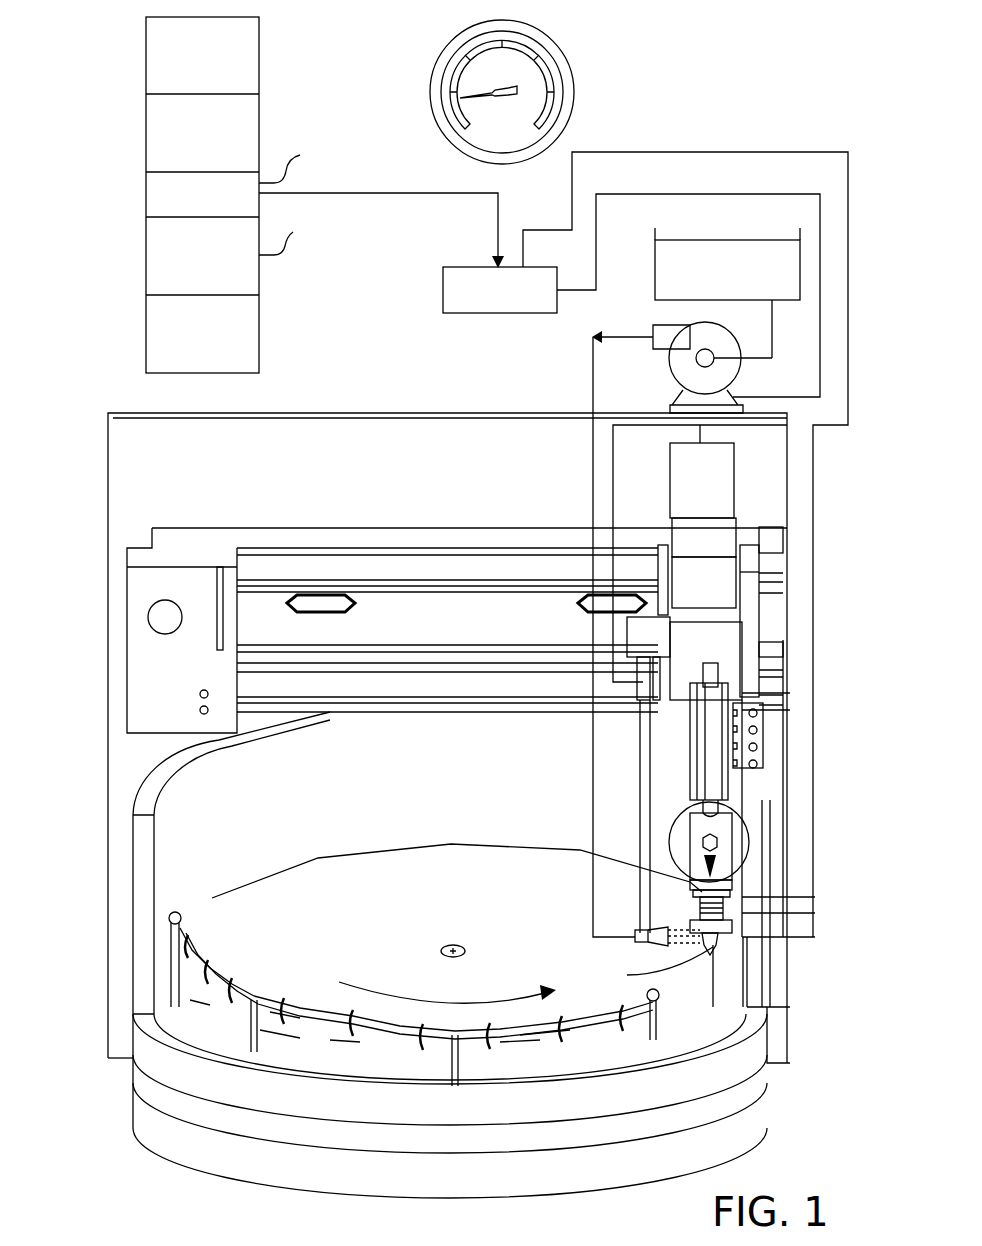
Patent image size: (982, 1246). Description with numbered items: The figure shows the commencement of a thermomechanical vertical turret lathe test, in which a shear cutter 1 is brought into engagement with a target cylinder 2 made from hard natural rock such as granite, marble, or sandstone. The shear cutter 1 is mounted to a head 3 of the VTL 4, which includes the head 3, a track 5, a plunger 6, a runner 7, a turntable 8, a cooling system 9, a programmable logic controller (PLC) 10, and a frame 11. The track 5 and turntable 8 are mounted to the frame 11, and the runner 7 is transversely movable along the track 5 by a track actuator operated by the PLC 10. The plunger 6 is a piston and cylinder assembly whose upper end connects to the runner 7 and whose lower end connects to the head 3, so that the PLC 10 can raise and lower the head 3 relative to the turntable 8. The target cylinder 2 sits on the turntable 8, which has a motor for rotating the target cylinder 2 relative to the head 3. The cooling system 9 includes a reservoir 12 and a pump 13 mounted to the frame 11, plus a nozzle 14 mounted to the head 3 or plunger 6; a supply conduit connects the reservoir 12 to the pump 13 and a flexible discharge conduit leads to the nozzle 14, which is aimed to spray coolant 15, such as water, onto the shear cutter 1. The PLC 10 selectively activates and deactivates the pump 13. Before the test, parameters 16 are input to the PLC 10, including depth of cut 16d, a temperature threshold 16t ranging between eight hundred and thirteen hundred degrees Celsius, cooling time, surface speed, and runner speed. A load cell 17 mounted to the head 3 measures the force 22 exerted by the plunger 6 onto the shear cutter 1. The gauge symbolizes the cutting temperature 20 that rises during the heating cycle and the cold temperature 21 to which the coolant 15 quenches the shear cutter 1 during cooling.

The shear cutter 1 is at (700, 950).
The target cylinder 2 is at (441, 965).
The head 3 is at (681, 849).
The vertical turret lathe (VTL) 4 is at (88, 45).
The track 5 is at (278, 527).
The plunger 6 is at (637, 688).
The runner 7 is at (686, 479).
The turntable 8 is at (193, 1108).
The cooling system 9 is at (655, 328).
The programmable logic controller (PLC) 10 is at (478, 266).
The frame 11 is at (461, 738).
The reservoir 12 is at (655, 258).
The pump 13 is at (672, 380).
The nozzle 14 is at (640, 933).
The coolant 15 is at (694, 932).
The parameters 16 is at (134, 17).
The depth of cut (DOC) 16d is at (299, 162).
The temperature threshold (Max Temp) 16t is at (293, 236).
The load cell 17 is at (697, 904).
The temperature 20 is at (431, 60).
The cold temperature 21 is at (447, 95).
The force 22 is at (722, 870).